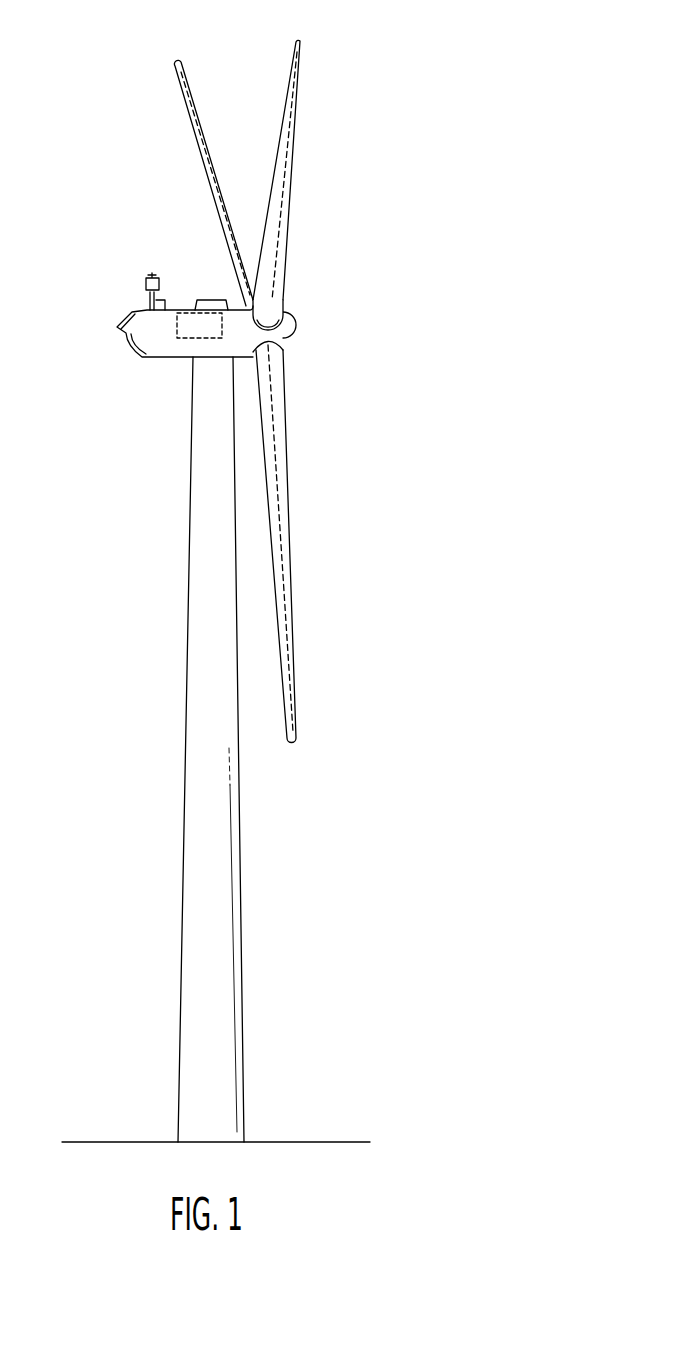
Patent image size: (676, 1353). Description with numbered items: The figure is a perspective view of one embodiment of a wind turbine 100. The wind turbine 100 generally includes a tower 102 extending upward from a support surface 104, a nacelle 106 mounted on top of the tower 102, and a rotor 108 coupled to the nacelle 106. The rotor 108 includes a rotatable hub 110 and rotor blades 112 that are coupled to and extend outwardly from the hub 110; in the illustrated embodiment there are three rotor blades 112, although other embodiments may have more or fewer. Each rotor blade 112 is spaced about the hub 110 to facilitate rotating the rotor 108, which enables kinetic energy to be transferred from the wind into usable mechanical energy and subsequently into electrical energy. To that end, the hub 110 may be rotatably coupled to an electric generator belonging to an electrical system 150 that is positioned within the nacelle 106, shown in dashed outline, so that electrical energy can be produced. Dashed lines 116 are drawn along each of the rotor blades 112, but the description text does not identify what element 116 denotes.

The wind turbine 100 is at (282, 591).
The tower 102 is at (220, 845).
The support surface 104 is at (137, 1140).
The nacelle 106 is at (158, 358).
The rotor 108 is at (278, 391).
The rotatable hub 110 is at (293, 338).
The rotor blade 112 is at (205, 124).
The lightning protection/conductor element 116 is at (215, 200).
The electrical system 150 is at (192, 302).